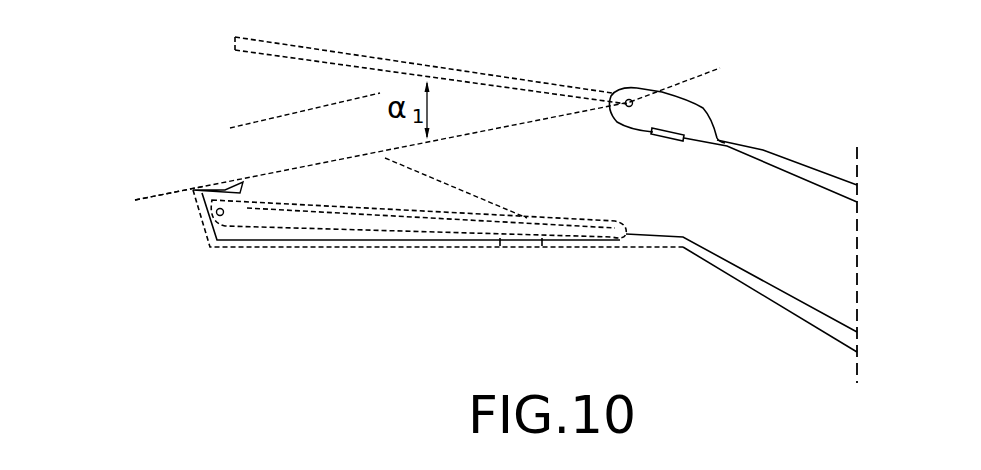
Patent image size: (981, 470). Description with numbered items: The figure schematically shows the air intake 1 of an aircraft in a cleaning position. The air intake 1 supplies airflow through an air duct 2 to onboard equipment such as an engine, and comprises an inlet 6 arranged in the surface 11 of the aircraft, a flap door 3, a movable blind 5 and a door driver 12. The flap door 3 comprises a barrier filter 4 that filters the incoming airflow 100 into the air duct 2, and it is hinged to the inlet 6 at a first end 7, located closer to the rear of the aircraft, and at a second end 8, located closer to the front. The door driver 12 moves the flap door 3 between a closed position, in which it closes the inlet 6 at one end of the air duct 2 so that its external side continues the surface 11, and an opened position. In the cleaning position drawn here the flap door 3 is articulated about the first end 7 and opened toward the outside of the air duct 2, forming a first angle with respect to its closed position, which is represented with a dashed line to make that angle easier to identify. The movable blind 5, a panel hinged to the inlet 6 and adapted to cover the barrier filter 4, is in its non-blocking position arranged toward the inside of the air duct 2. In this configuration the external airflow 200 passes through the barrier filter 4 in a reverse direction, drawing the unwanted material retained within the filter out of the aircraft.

The air intake 1 is at (830, 55).
The air duct 2 is at (833, 232).
The flap door 3 is at (512, 40).
The barrier filter 4 is at (328, 52).
The movable blind 5 is at (297, 203).
The inlet 6 is at (243, 145).
The first end 7 is at (650, 67).
The second end 8 is at (193, 163).
The surface of the aircraft 11 is at (100, 177).
The door driver 12 is at (663, 142).
The incoming airflow 100 is at (456, 178).
The external airflow 200 is at (305, 98).